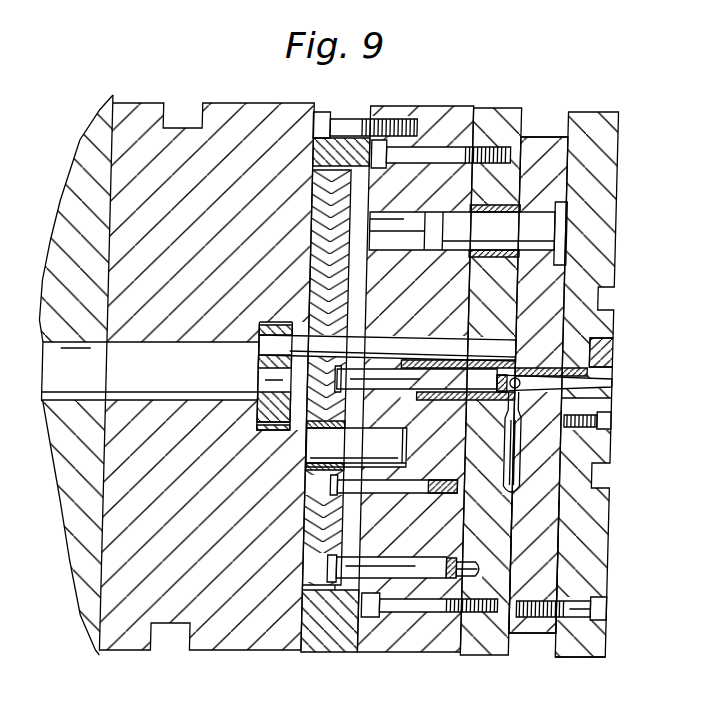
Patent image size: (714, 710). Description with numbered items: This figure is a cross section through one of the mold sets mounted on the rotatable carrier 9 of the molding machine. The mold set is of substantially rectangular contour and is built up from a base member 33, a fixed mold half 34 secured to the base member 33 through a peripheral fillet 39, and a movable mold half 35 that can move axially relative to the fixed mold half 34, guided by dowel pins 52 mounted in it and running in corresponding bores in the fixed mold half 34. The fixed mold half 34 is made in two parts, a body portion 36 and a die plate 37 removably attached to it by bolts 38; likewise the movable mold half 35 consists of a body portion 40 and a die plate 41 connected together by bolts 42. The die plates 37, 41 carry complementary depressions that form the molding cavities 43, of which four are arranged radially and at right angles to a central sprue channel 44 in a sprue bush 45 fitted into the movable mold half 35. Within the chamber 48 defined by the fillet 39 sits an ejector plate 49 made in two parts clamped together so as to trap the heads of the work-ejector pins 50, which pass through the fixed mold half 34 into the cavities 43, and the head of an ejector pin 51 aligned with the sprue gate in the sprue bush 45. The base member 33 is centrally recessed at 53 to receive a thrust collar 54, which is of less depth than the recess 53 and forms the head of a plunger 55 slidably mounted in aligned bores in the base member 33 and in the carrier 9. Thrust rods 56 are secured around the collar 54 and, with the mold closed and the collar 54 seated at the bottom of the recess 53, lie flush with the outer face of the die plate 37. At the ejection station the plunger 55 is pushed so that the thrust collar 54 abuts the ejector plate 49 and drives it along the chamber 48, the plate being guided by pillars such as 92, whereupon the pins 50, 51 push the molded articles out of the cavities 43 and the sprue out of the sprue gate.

The carrier 9 is at (83, 488).
The base member 33 is at (247, 650).
The fixed mold half 34 is at (429, 651).
The movable mold half 35 is at (595, 649).
The body portion 36 is at (478, 104).
The die plate 37 is at (518, 118).
The bolts 38 is at (430, 150).
The peripheral fillet 39 is at (338, 108).
The body portion 40 is at (609, 118).
The die plate 41 is at (552, 140).
The bolts 42 is at (610, 612).
The molding cavities 43 is at (530, 492).
The central sprue channel 44 is at (615, 385).
The sprue bush 45 is at (606, 347).
The chamber 48 is at (352, 203).
The ejector plate 49 is at (307, 592).
The work-ejector pins 50 is at (330, 478).
The ejector pin 51 is at (416, 381).
The dowel pins 52 is at (468, 233).
The recess 53 is at (263, 430).
The thrust collar 54 is at (279, 322).
The plunger 55 is at (150, 371).
The thrust rods 56 is at (387, 348).
The pillars 92 is at (356, 445).